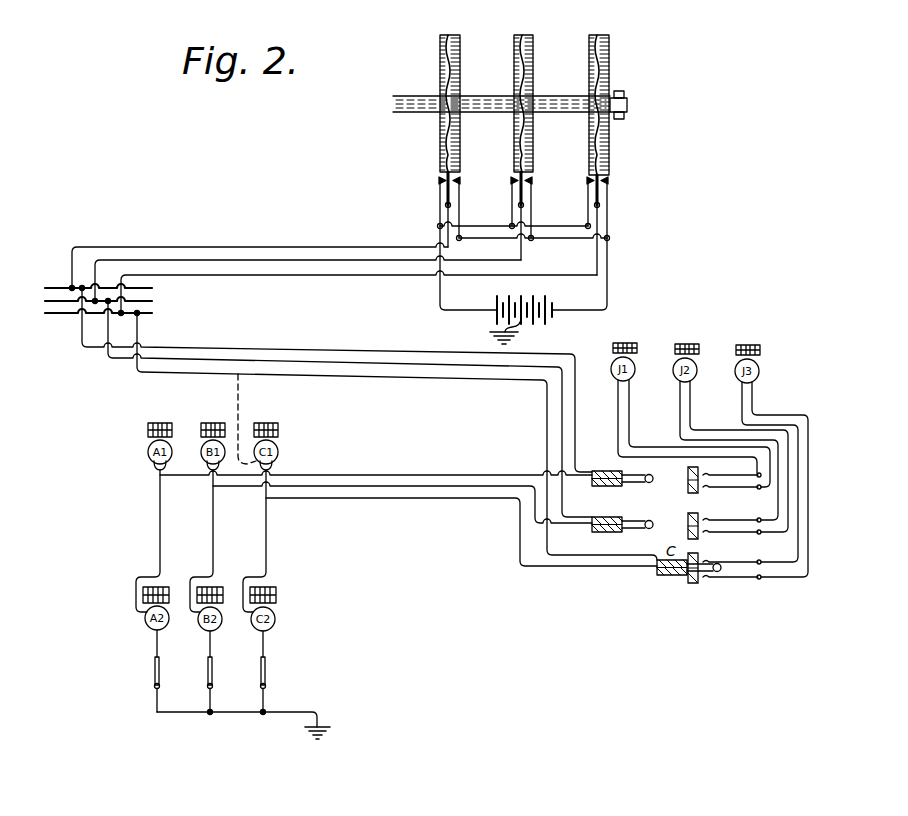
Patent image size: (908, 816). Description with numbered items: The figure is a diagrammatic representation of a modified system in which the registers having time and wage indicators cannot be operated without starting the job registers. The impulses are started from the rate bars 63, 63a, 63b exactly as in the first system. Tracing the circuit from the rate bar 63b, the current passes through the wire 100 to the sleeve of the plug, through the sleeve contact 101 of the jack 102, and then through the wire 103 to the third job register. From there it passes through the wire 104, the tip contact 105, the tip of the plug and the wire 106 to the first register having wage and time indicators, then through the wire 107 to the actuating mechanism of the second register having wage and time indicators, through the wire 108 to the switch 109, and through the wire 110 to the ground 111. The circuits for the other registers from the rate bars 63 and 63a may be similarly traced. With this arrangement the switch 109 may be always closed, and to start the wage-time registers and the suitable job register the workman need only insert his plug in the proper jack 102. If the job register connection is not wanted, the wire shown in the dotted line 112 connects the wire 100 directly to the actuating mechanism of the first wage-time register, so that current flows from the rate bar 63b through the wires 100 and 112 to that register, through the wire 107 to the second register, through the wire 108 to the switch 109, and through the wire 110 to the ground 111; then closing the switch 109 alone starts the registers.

The rate bar 63 is at (153, 289).
The rate bar 63a is at (155, 301).
The rate bar 63b is at (155, 314).
The wire 100 is at (297, 378).
The sleeve contact 101 is at (738, 582).
The jack 102 is at (727, 572).
The wire 103 is at (742, 478).
The wire 104 is at (740, 390).
The tip contact 105 is at (740, 556).
The wire 106 is at (565, 569).
The wire 107 is at (270, 530).
The wire 108 is at (266, 648).
The switch 109 is at (266, 677).
The wire 110 is at (288, 714).
The ground 111 is at (322, 737).
The dotted-line wire 112 is at (238, 400).